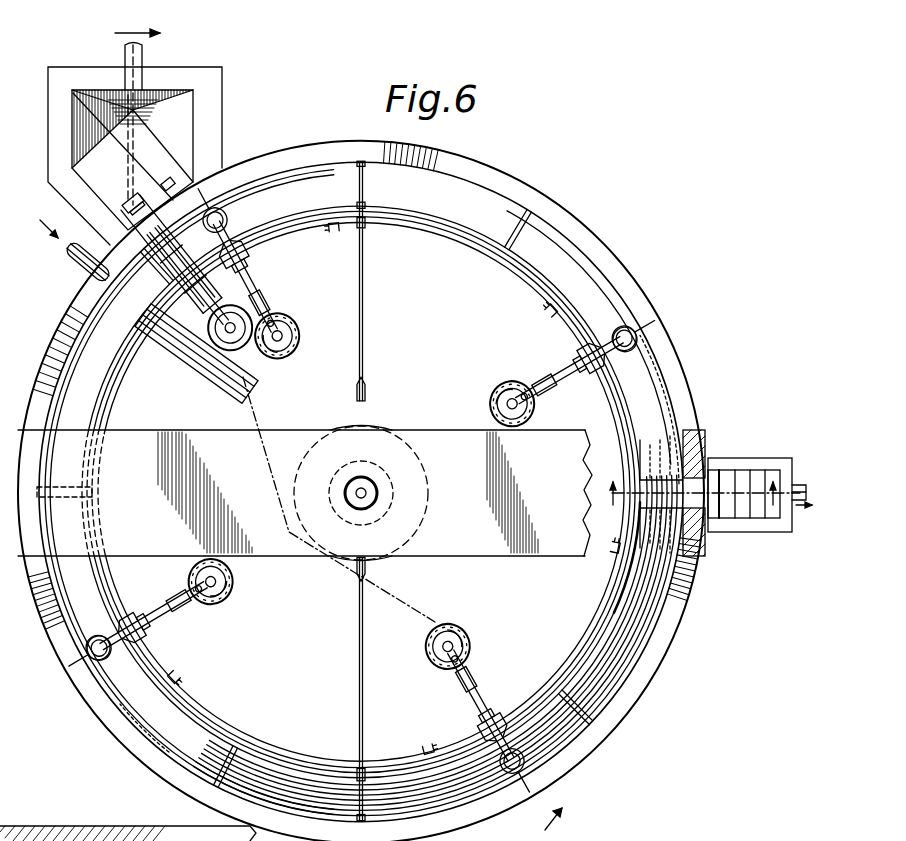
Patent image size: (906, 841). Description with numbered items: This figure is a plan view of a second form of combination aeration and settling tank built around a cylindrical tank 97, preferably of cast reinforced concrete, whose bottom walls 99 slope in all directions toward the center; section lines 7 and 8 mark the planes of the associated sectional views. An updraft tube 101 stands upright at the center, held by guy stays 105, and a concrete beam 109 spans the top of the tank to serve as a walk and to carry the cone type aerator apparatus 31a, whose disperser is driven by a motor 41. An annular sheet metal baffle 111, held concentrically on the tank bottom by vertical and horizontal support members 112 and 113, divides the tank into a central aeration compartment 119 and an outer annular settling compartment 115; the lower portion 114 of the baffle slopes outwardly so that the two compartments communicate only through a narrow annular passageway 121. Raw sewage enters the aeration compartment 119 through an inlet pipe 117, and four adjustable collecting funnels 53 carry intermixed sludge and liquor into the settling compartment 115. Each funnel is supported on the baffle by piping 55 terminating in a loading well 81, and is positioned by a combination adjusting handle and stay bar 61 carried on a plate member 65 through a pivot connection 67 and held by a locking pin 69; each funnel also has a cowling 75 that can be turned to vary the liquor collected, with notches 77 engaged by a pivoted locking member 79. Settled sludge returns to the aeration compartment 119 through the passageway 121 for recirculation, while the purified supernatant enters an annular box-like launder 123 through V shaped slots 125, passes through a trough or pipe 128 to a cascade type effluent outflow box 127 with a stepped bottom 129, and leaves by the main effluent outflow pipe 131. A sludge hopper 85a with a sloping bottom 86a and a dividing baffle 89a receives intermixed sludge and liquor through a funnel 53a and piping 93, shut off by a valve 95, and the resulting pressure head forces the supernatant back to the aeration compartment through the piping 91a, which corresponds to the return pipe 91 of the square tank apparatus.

The section line 7- 7 is at (338, 424).
The section line 8- 8 is at (704, 495).
The cone type aerator apparatus 31a is at (372, 425).
The motor 41 is at (355, 478).
The collecting funnel 53 is at (505, 382).
The funnel 53a is at (225, 335).
The piping 55 is at (555, 380).
The combination adjusting handle and stay bar 61 is at (555, 395).
The plate member 65 is at (147, 618).
The pivot connection 67 is at (578, 358).
The locking pin 69 is at (582, 360).
The cowling 75 is at (533, 412).
The locking notch 77 is at (492, 384).
The pivoted locking member 79 is at (530, 388).
The loading well 81 is at (637, 335).
The sludge hopper 85a is at (208, 128).
The sloping bottom 86a is at (148, 136).
The baffle 89a is at (120, 183).
The pipe 91 is at (76, 251).
The piping 91a is at (196, 200).
The piping 93 is at (170, 276).
The valve 95 is at (124, 206).
The cylindrical tank 97 is at (603, 252).
The bottom wall 99 is at (560, 296).
The updraft tube 101 is at (395, 490).
The guy stay 105 is at (363, 326).
The concrete beam 109 is at (447, 430).
The annular baffle 111 is at (610, 575).
The vertical support member 112 is at (280, 238).
The horizontal support member 113 is at (526, 222).
The lower portion of baffle 114 is at (645, 388).
The annular settling compartment 115 is at (423, 202).
The inlet pipe 117 is at (175, 372).
The aeration compartment 119 is at (469, 357).
The annular passageway 121 is at (640, 345).
The launder 123 is at (628, 418).
The V shaped slot 125 is at (522, 270).
The effluent outflow box 127 is at (740, 458).
The trough or pipe 128 is at (672, 493).
The stepped bottom 129 is at (742, 518).
The main effluent outflow pipe 131 is at (797, 485).